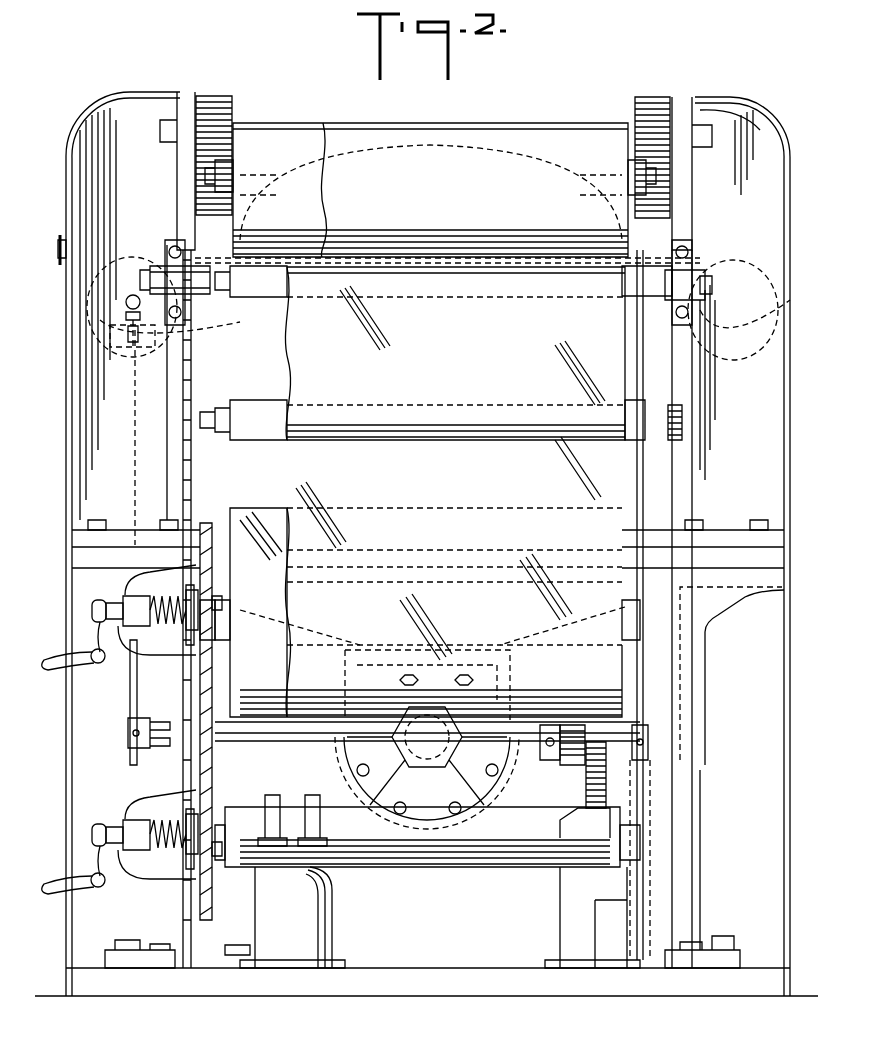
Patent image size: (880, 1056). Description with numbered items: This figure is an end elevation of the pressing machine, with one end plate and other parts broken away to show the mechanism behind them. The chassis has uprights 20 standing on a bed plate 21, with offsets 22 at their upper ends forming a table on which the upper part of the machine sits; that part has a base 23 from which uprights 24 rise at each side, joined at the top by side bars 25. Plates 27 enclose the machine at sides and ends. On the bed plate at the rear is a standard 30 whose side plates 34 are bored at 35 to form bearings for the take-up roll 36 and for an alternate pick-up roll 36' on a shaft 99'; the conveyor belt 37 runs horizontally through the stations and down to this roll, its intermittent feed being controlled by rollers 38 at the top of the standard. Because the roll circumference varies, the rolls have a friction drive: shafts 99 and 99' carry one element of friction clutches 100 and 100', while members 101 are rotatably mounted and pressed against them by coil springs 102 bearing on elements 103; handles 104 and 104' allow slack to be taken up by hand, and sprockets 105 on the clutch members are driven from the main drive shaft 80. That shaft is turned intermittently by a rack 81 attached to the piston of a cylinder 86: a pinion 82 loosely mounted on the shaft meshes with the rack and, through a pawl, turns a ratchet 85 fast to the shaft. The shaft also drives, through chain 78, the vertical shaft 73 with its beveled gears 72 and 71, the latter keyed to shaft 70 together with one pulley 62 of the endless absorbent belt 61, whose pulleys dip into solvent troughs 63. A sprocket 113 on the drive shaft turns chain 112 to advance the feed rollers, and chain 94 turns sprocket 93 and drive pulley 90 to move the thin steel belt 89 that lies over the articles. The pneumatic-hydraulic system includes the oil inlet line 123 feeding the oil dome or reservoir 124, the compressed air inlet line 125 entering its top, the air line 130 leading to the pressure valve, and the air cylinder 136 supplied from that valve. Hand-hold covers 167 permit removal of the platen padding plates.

The uprights 20 is at (698, 660).
The bed plate 21 is at (738, 966).
The offsets 22 is at (768, 570).
The base 23 is at (768, 546).
The uprights 24 is at (760, 117).
The side pieces or bars 25 is at (188, 92).
The plates 27 is at (68, 400).
The standard 30 is at (140, 920).
The side plates 34 is at (212, 770).
The bore 35 is at (212, 620).
The take-up roll 36 is at (427, 577).
The alternate pick-up roll 36' is at (427, 850).
The conveyor belt 37 is at (286, 332).
The rollers 38 is at (248, 412).
The absorbent belt 61 is at (796, 260).
The pulleys 62 is at (116, 274).
The troughs 63 is at (228, 332).
The shaft 70 is at (127, 304).
The beveled gear 71 is at (142, 286).
The beveled gear 72 is at (118, 351).
The vertical shaft 73 is at (134, 416).
The chain 78 is at (133, 702).
The main drive shaft 80 is at (316, 738).
The rack 81 is at (586, 794).
The pinion 82 is at (578, 762).
The ratchet 85 is at (550, 760).
The cylinder 86 is at (560, 906).
The thin steel belt 89 is at (313, 122).
The drive pulley 90 is at (290, 126).
The sprocket 93 is at (196, 162).
The chain 94 is at (190, 366).
The shaft 99 is at (76, 611).
The shaft 99' is at (76, 826).
The friction clutch 100 is at (144, 668).
The friction clutch 100' is at (154, 874).
The clutch member 101 is at (196, 602).
The coil springs 102 is at (156, 626).
The elements 103 is at (142, 594).
The handles 104 is at (66, 646).
The handle 104' is at (66, 869).
The sprocket 105 is at (212, 572).
The chain 112 is at (640, 488).
The sprocket 113 is at (653, 754).
The oil inlet line 123 is at (232, 945).
The oil dome or reservoir 124 is at (320, 912).
The compressed air inlet line 125 is at (266, 820).
The air line 130 is at (318, 820).
The air cylinder 136 is at (360, 778).
The hand-hold covers 167 is at (62, 278).